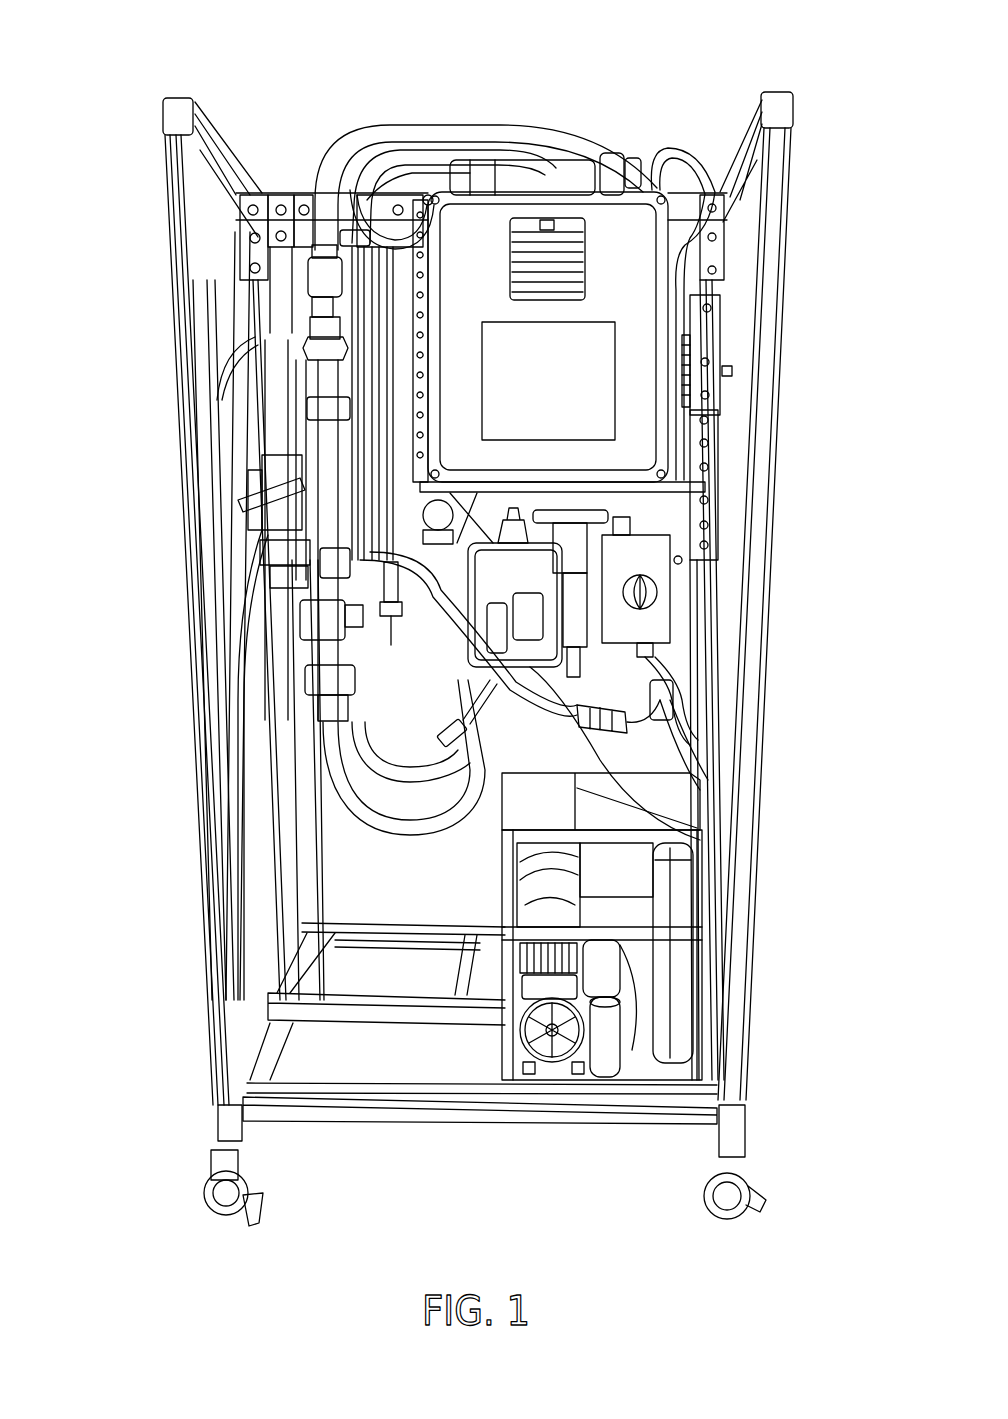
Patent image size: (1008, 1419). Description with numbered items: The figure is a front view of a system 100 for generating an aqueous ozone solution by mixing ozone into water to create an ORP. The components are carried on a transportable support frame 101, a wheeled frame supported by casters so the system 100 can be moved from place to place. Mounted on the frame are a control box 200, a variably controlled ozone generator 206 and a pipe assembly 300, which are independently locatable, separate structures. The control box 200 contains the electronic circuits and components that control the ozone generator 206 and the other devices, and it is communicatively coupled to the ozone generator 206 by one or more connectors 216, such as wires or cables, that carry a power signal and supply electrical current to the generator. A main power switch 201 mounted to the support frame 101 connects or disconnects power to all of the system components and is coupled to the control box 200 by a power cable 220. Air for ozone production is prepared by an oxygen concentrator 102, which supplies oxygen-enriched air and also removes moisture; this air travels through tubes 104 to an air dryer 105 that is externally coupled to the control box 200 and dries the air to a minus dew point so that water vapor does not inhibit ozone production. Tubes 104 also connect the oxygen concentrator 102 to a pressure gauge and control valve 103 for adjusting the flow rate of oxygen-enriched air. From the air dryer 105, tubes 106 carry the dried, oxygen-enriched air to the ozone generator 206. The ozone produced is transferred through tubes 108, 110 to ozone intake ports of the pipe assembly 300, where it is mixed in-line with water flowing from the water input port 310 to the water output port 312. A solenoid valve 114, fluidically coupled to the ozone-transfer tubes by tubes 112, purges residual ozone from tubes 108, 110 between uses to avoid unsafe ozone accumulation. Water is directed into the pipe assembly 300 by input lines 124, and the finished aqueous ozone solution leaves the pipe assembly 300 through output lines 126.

The system 100 is at (151, 37).
The transportable support frame 101 is at (190, 284).
The oxygen concentrator 102 is at (700, 905).
The pressure gauge and control valve 103 is at (735, 373).
The tubes 104 is at (675, 170).
The air dryer 105 is at (556, 160).
The tubes 106 is at (408, 172).
The tubes 108 is at (393, 645).
The tubes 110 is at (360, 618).
The tubes 112 is at (682, 560).
The solenoid valve 114 is at (690, 720).
The input lines 124 is at (423, 822).
The output lines 126 is at (503, 125).
The control box 200 is at (672, 305).
The main power switch 201 is at (690, 615).
The variably controlled ozone generator 206 is at (365, 245).
The connectors 216 is at (330, 560).
The power cable 220 is at (683, 536).
The pipe assembly 300 is at (257, 619).
The water input port 310 is at (320, 690).
The water output port 312 is at (322, 280).